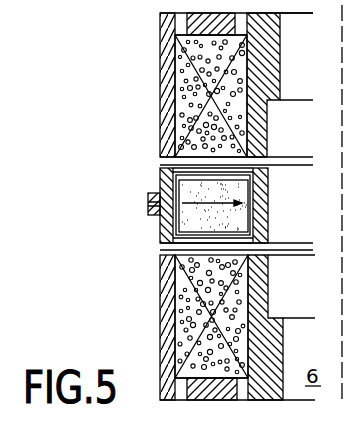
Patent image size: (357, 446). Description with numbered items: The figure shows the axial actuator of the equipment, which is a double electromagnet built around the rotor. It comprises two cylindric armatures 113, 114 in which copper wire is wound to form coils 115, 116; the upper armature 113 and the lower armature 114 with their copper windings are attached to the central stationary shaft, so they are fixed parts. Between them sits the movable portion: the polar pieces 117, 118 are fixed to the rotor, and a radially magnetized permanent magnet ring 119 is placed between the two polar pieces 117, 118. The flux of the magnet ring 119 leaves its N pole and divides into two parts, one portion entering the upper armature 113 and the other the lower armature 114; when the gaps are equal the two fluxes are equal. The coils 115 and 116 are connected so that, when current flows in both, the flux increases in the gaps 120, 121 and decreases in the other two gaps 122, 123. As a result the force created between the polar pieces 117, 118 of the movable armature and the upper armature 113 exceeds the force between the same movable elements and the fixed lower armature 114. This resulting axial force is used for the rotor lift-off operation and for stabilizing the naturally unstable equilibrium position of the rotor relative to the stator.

The upper cylindric armature 113 is at (265, 68).
The lower cylindric armature 114 is at (272, 340).
The copper winding 115 is at (175, 82).
The copper winding 116 is at (175, 337).
The polar piece 117 is at (157, 207).
The polar piece 118 is at (266, 197).
The permanent magnet ring 119 is at (160, 182).
The gap 120 is at (163, 164).
The gap 121 is at (263, 160).
The gap 122 is at (170, 248).
The gap 123 is at (262, 247).